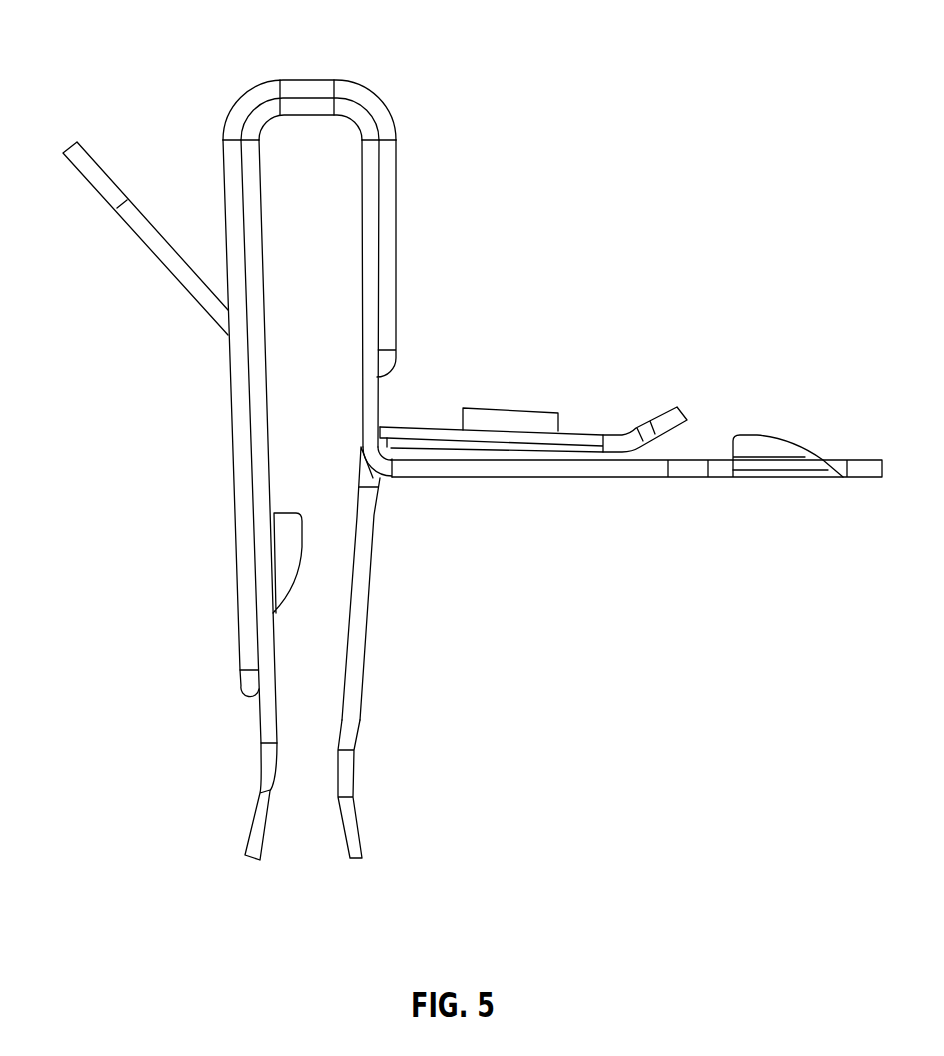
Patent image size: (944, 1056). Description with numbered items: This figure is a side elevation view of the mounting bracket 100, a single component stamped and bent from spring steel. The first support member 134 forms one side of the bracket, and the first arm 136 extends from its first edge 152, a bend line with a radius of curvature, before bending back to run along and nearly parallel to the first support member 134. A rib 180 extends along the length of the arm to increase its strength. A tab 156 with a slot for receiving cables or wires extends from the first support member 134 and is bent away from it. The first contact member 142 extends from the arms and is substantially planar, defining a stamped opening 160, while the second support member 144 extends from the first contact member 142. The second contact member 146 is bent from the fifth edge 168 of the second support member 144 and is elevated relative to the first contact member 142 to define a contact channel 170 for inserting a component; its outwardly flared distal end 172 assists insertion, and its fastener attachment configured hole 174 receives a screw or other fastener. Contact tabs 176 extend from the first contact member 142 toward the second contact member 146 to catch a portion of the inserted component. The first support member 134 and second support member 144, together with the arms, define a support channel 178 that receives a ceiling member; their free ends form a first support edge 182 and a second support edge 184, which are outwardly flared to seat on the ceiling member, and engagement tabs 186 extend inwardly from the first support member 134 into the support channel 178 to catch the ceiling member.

The mounting bracket 100 is at (682, 132).
The first support member 134 is at (265, 682).
The first arm 136 is at (307, 105).
The first contact member 142 is at (587, 470).
The second support member 144 is at (355, 633).
The second contact member 146 is at (585, 432).
The first edge 152 is at (260, 115).
The tab 156 is at (93, 173).
The opening 160 is at (482, 503).
The fifth edge 168 is at (382, 424).
The contact channel 170 is at (700, 430).
The outwardly flared distal end 172 is at (675, 415).
The fastener attachment configured hole 174 is at (514, 398).
The contact tabs 176 is at (777, 447).
The support channel 178 is at (301, 862).
The rib 180 is at (387, 195).
The first support edge 182 is at (252, 857).
The second support edge 184 is at (357, 855).
The engagement tabs 186 is at (282, 538).